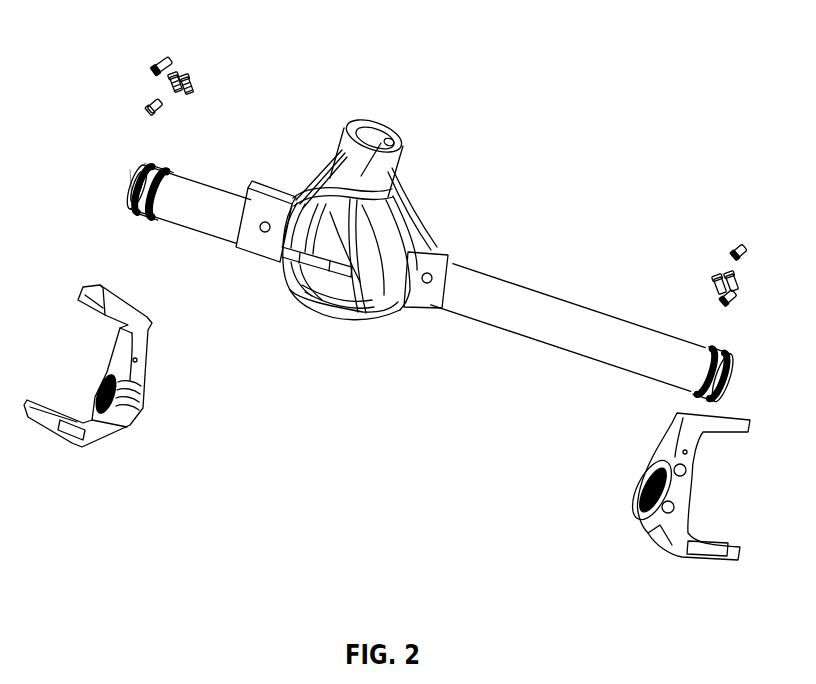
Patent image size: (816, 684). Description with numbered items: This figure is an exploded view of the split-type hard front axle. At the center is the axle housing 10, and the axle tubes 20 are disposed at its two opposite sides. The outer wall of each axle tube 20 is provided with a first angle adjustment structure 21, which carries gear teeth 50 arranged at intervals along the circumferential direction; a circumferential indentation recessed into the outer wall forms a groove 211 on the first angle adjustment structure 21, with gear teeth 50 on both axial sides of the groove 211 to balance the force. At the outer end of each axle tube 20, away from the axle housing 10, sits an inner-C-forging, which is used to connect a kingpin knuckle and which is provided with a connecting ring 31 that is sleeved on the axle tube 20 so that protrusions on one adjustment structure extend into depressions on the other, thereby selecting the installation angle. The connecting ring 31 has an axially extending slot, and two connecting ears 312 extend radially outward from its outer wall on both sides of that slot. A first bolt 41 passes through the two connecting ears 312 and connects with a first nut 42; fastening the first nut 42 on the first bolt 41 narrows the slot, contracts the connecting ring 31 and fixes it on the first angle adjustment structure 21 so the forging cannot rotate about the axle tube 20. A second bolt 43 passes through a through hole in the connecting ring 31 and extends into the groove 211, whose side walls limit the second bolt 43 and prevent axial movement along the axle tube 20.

The axle housing 10 is at (396, 144).
The axle tube 20 is at (507, 297).
The first angle adjustment structure 21 is at (157, 160).
The groove 211 is at (141, 167).
The connecting ring 31 is at (130, 384).
The connecting ear 312 is at (143, 407).
The first bolt 41 is at (190, 78).
The first nut 42 is at (182, 95).
The second bolt 43 is at (158, 64).
The gear teeth 50 is at (136, 184).